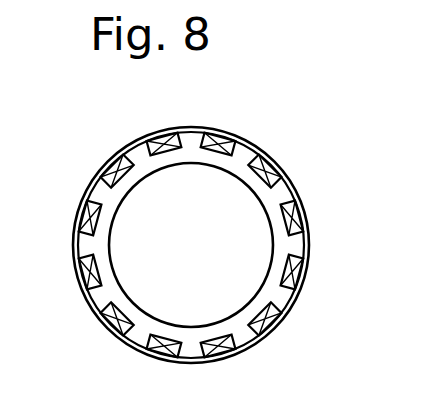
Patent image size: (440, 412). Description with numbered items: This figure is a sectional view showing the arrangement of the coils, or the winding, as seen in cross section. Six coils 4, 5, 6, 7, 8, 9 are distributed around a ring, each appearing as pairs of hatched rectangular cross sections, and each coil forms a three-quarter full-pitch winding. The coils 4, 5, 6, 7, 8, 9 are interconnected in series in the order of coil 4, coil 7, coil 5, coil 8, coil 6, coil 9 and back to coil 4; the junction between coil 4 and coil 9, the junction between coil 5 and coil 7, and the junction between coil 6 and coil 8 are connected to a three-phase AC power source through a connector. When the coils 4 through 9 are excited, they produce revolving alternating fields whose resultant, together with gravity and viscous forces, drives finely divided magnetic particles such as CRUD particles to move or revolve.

The coil 4 is at (222, 140).
The coil 5 is at (265, 319).
The coil 6 is at (90, 272).
The coil 7 is at (164, 346).
The coil 8 is at (292, 218).
The coil 9 is at (265, 171).